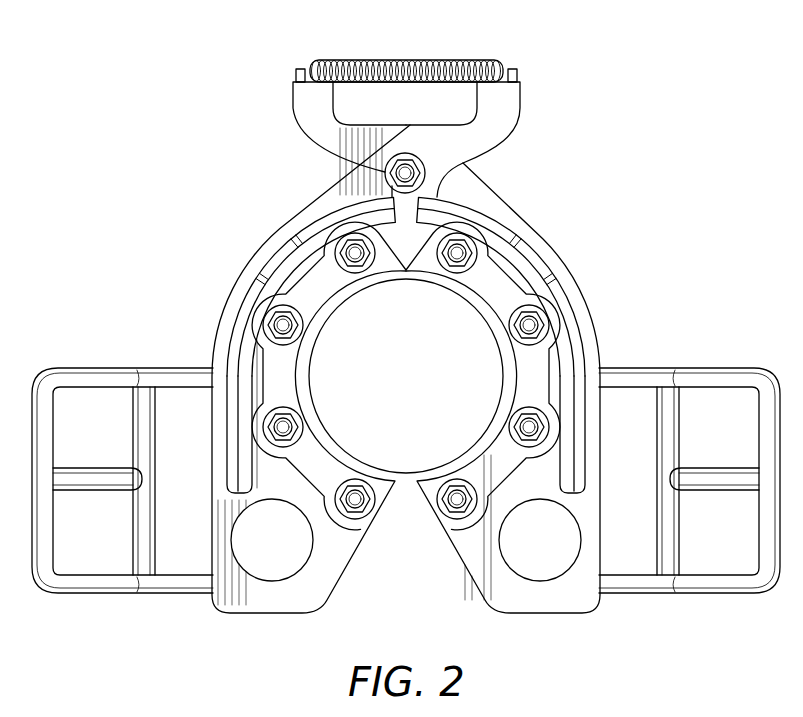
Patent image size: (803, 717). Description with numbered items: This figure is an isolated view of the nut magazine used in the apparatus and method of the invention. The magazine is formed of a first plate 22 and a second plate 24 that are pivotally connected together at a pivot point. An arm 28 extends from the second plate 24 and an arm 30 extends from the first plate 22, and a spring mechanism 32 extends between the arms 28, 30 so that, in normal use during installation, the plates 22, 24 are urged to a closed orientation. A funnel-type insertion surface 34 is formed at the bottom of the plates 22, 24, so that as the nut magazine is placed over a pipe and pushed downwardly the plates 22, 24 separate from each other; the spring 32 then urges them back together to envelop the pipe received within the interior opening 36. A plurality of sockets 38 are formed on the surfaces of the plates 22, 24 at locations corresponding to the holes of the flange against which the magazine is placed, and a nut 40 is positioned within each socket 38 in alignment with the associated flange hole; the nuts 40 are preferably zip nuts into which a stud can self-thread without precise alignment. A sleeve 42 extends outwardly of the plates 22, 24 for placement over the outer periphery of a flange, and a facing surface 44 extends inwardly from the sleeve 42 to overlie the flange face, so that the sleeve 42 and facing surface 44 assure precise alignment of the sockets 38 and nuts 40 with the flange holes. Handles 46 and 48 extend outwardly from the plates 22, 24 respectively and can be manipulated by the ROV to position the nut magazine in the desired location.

The first plate 22 is at (292, 213).
The second plate 24 is at (476, 187).
The arm 28 is at (310, 115).
The arm 30 is at (508, 114).
The spring mechanism 32 is at (378, 60).
The funnel-type insertion surface 34 is at (478, 580).
The interior opening 36 is at (470, 302).
The sockets 38 is at (477, 240).
The nut 40 is at (548, 318).
The sleeve 42 is at (238, 347).
The facing surface 44 is at (300, 285).
The handle 46 is at (125, 372).
The handle 48 is at (730, 372).